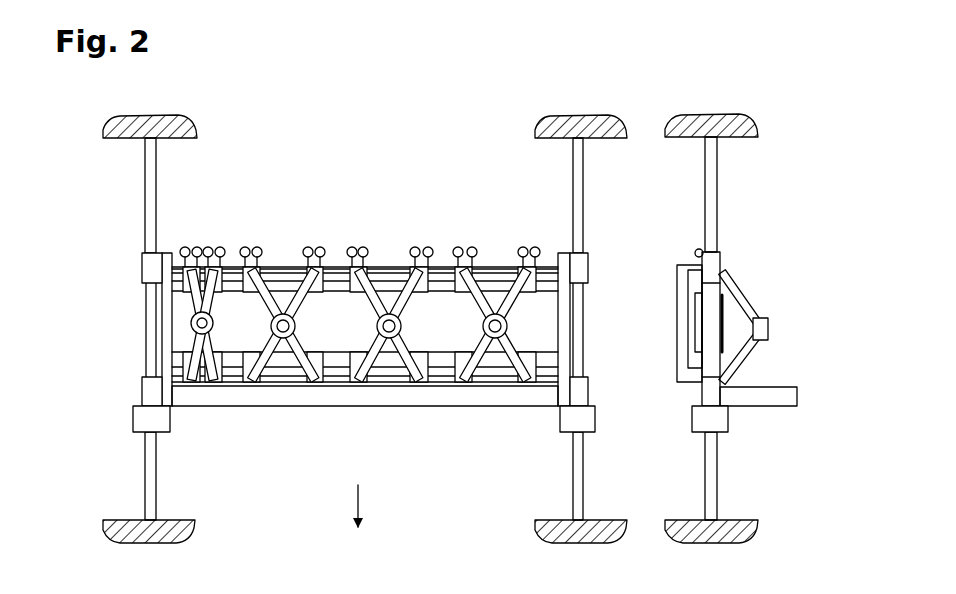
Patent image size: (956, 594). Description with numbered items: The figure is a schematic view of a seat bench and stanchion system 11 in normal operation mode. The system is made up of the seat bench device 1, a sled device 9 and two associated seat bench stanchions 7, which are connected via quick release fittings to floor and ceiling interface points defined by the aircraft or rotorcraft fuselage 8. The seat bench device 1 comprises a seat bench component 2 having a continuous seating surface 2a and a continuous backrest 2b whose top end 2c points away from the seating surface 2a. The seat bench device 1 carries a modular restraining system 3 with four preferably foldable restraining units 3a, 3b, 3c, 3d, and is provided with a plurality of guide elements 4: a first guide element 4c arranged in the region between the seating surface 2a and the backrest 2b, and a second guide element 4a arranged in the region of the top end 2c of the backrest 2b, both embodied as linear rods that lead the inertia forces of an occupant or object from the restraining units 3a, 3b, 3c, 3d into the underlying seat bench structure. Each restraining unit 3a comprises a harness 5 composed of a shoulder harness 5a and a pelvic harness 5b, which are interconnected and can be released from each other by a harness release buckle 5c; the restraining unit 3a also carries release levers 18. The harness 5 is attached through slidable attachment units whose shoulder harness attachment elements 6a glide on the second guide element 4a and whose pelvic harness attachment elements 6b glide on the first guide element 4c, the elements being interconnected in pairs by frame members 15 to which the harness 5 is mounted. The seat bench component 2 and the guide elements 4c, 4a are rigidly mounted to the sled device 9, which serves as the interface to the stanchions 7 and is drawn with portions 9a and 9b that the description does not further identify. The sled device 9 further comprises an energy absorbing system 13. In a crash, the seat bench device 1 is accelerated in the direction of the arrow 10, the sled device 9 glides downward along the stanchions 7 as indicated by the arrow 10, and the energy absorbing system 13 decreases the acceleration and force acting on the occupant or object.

The seat bench device 1 is at (426, 165).
The seat bench component 2 is at (460, 410).
The seating surface 2a is at (437, 397).
The backrest 2b is at (336, 318).
The top end 2c is at (452, 285).
The modular restraining system 3 is at (490, 362).
The restraining unit 3a is at (190, 250).
The restraining unit 3b is at (272, 262).
The restraining unit 3c is at (376, 262).
The restraining unit 3d is at (484, 262).
The guide elements 4 is at (338, 384).
The second guide element 4a is at (340, 265).
The first guide element 4c is at (386, 380).
The harness 5 is at (762, 292).
The shoulder harness 5a is at (188, 305).
The pelvic harness 5b is at (188, 340).
The harness release buckle 5c is at (190, 324).
The shoulder harness attachment elements 6a is at (232, 262).
The pelvic harness attachment elements 6b is at (227, 386).
The seat bench stanchions 7 is at (150, 164).
The aircraft fuselage 8 is at (135, 122).
The sled device 9 is at (138, 248).
The upper post bracket 9a is at (150, 270).
The lower post bracket 9b is at (150, 390).
The arrow 10 is at (357, 500).
The seat bench and stanchion system 11 is at (378, 120).
The energy absorbing system 13 is at (176, 424).
The frame members 15 is at (236, 360).
The release levers 18 is at (212, 250).